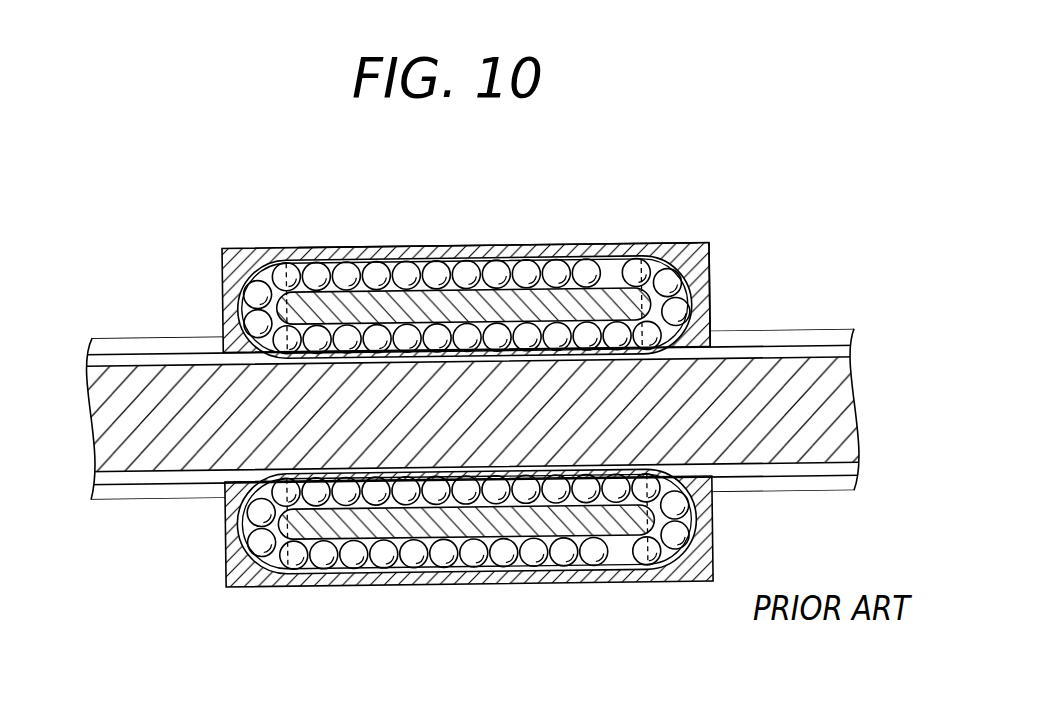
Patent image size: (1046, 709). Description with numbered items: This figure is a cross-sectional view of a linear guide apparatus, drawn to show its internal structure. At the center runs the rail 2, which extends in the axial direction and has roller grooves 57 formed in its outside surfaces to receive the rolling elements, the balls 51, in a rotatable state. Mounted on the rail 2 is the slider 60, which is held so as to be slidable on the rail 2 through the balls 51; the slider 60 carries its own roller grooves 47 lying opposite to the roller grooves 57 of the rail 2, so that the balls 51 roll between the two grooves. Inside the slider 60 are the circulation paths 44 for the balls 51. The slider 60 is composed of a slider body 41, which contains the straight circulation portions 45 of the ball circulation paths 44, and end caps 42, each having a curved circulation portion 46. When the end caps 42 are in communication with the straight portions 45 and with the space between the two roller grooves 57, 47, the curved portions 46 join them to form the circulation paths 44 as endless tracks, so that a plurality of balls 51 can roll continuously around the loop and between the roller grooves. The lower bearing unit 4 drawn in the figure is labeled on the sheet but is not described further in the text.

The rail 2 is at (838, 412).
The roller grooves 57 is at (823, 342).
The circulation paths 44 is at (283, 172).
The slider 60 is at (504, 237).
The slider body 41 is at (617, 246).
The end caps 42 is at (680, 246).
The lower linear motion bearing 4 is at (697, 652).
The curved circulation portions 46 is at (243, 304).
The straight circulation portions 45 is at (331, 256).
The roller grooves 47 is at (402, 490).
The balls 51 is at (411, 269).